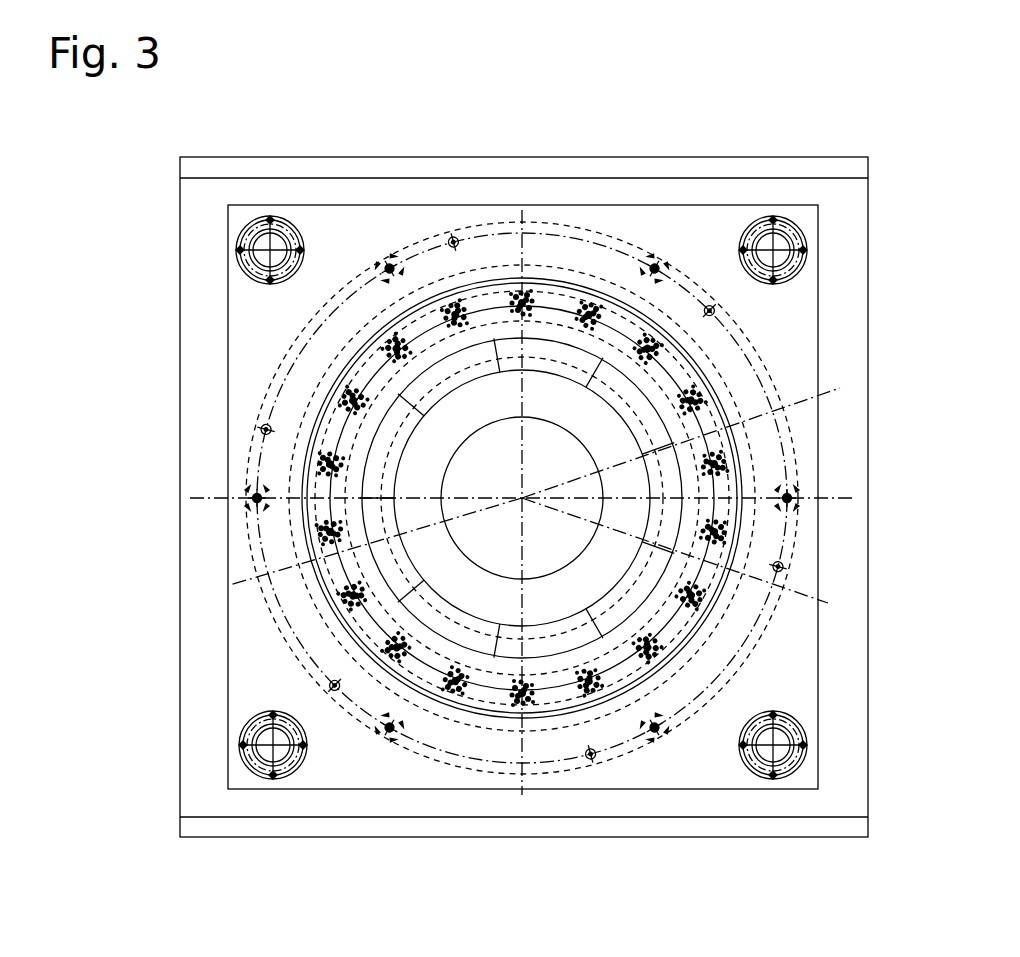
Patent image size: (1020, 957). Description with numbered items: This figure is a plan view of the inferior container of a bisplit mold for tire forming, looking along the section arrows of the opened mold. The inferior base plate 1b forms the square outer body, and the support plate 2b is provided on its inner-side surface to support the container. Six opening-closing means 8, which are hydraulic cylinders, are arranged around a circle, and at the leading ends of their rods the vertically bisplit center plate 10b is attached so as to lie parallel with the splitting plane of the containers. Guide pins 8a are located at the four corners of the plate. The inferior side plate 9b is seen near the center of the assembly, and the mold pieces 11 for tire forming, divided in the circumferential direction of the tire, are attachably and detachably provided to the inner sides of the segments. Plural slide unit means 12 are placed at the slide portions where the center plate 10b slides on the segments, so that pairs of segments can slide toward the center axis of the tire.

The inferior base plate 1b is at (210, 228).
The support plate 2b is at (655, 768).
The opening-closing means 8 is at (376, 254).
The guide pins 8a is at (291, 218).
The inferior side plate 9b is at (467, 603).
The center plate 10b is at (743, 473).
The mold pieces for tire forming 11 is at (623, 387).
The slide unit means 12 is at (358, 352).